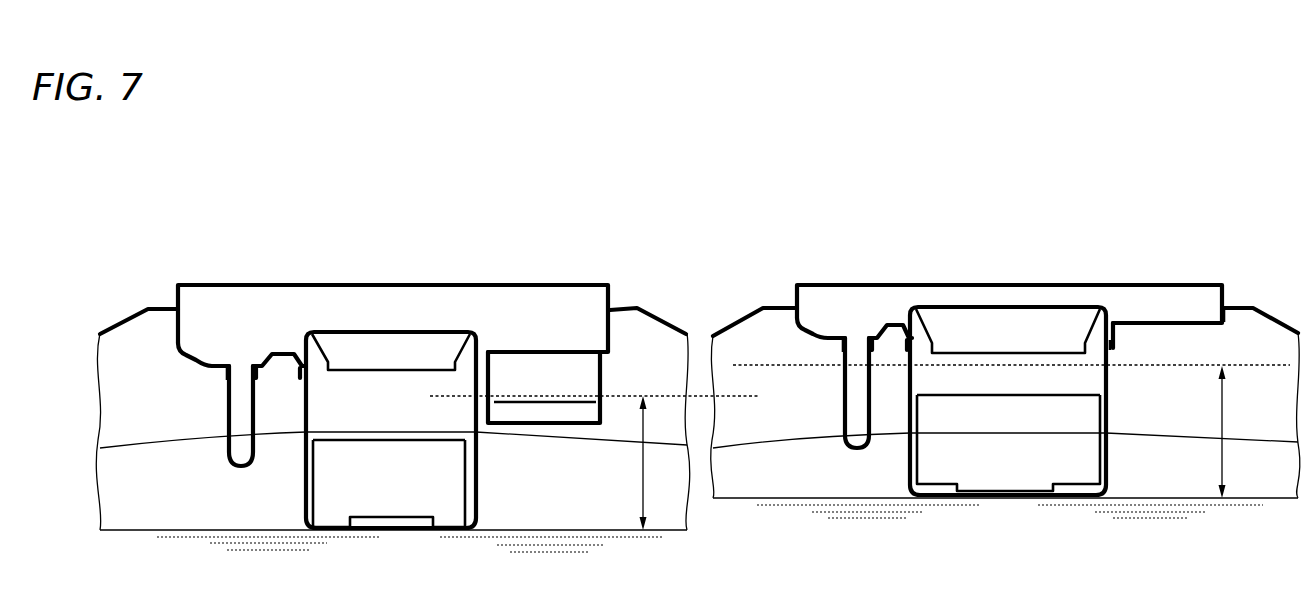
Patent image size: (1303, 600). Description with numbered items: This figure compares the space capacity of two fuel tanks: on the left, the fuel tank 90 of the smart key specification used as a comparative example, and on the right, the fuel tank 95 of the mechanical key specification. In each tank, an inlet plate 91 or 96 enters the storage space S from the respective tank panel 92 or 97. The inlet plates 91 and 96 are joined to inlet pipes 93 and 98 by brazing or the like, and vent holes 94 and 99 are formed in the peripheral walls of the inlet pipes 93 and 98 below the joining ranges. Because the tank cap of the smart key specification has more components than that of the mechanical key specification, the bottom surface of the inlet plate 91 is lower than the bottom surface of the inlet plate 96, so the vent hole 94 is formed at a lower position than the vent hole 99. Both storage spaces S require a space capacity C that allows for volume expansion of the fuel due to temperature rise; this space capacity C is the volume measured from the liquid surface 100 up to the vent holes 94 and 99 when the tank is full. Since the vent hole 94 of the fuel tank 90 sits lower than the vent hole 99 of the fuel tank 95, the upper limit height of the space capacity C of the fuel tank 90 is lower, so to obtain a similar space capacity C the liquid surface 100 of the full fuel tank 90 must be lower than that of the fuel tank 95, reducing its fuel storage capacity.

The fuel tank 90 is at (156, 284).
The inlet plate 91 is at (174, 351).
The tank panel 92 is at (118, 317).
The inlet pipe 93 is at (300, 466).
The vent hole 94 is at (500, 404).
The fuel tank 95 is at (771, 284).
The inlet plate 96 is at (817, 340).
The tank panel 97 is at (735, 318).
The inlet pipe 98 is at (908, 452).
The vent hole 99 is at (1112, 368).
The liquid surface 100 is at (557, 530).
The storage space S is at (190, 480).
The space capacity C is at (942, 448).